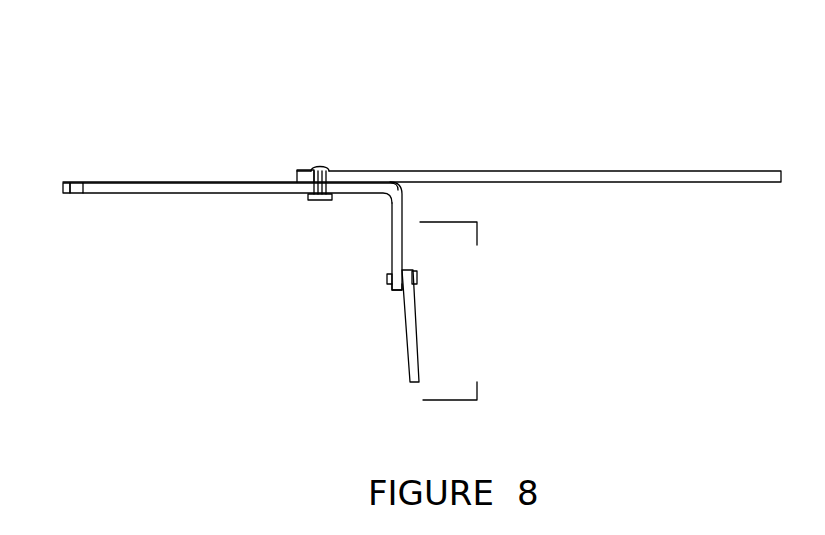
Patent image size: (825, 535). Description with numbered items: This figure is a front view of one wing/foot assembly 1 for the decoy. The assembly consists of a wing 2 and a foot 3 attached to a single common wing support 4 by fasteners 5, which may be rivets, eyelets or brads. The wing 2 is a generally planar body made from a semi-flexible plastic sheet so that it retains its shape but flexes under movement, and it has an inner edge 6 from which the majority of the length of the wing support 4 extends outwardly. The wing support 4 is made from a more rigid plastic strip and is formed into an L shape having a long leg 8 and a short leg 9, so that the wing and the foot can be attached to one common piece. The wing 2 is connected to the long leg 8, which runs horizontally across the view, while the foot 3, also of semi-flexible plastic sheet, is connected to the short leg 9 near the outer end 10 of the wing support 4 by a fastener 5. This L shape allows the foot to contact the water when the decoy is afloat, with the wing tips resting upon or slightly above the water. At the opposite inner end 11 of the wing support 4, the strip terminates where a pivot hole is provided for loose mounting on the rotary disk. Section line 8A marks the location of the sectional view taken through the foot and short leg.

The wing/foot assembly 1 is at (242, 188).
The wing 2 is at (620, 174).
The foot 3 is at (407, 348).
The wing support 4 is at (260, 181).
The fasteners 5 is at (318, 164).
The inner edge 6 is at (296, 178).
The long leg 8 is at (240, 156).
The short leg 9 is at (392, 230).
The outer end 10 is at (398, 292).
The inner end 11 is at (63, 190).
The section line 8A is at (459, 311).